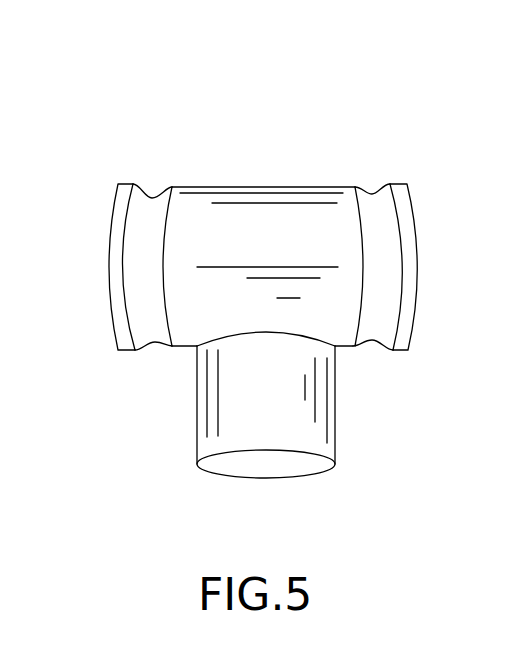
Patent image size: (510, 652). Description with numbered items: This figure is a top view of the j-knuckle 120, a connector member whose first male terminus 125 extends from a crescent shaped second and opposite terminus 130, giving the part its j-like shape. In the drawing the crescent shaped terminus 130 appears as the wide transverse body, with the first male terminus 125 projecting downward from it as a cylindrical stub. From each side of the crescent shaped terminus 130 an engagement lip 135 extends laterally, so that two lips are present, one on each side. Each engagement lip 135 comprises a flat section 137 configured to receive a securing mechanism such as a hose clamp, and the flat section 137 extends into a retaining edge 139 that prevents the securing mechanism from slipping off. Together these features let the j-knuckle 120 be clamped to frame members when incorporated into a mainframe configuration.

The j-knuckle 120 is at (221, 70).
The first male terminus 125 is at (245, 442).
The crescent shaped second terminus 130 is at (253, 187).
The engagement lip 135 is at (155, 198).
The flat section 137 is at (130, 260).
The retaining edge 139 is at (118, 232).